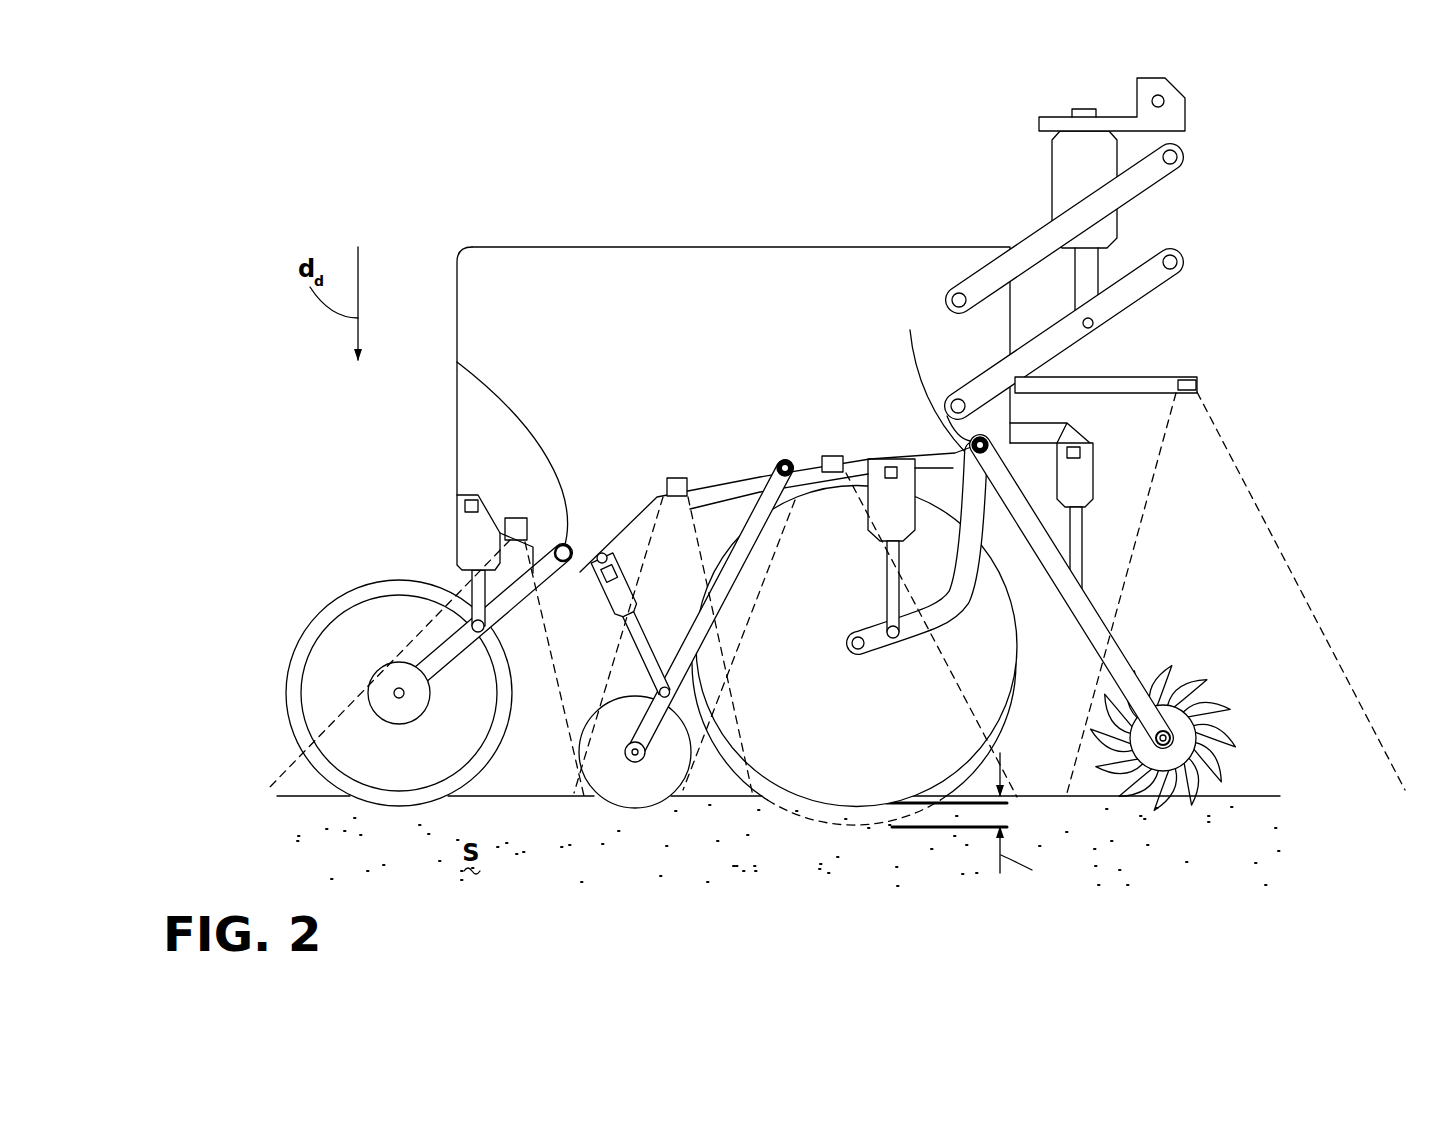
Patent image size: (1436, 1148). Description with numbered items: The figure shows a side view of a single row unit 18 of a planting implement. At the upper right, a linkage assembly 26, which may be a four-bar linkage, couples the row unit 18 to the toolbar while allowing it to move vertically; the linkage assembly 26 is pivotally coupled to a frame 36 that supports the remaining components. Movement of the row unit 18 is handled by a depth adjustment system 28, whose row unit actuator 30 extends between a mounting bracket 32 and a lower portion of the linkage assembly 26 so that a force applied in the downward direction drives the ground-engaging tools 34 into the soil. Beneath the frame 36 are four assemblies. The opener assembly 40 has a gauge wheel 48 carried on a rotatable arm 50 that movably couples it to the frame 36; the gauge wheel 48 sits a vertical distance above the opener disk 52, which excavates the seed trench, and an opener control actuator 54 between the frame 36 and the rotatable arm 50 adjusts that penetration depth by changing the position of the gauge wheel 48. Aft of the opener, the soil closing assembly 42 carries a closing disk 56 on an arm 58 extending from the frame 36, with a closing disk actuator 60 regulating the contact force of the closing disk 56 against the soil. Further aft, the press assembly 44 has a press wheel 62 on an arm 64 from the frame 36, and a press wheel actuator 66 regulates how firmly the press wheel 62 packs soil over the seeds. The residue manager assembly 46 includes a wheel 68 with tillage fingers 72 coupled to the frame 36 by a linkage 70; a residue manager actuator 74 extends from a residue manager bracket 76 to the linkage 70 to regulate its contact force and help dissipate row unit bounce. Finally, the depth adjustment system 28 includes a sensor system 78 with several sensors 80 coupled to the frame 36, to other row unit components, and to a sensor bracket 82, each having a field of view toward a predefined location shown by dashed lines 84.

The row unit 18 is at (591, 127).
The linkage assembly 26 is at (1153, 197).
The depth adjustment system 28 is at (1018, 110).
The row unit actuator 30 is at (1052, 180).
The mounting bracket 32 is at (1133, 93).
The ground-engaging tool 34 is at (402, 812).
The frame 36 is at (753, 247).
The opener assembly 40 is at (1027, 712).
The soil closing assembly 42 is at (595, 692).
The press assembly 44 is at (393, 638).
The residue manager assembly 46 is at (1139, 632).
The gauge wheel 48 is at (877, 661).
The rotatable arm 50 is at (914, 630).
The opener disk 52 is at (797, 818).
The opener control actuator 54 is at (874, 537).
The closing disk 56 is at (578, 722).
The arm 58 is at (757, 503).
The closing disk actuator 60 is at (632, 584).
The press wheel 62 is at (286, 690).
The arm 64 is at (525, 603).
The press wheel actuator 66 is at (456, 533).
The wheel 68 is at (1196, 748).
The linkage 70 is at (1117, 646).
The tillage points or fingers 72 is at (1199, 700).
The residue manager actuator 74 is at (1087, 485).
The residue manager bracket 76 is at (1059, 437).
The sensor system 78 is at (1148, 342).
The sensor 80 is at (618, 535).
The sensor bracket 82 is at (1127, 375).
The dashed lines 84 is at (553, 793).